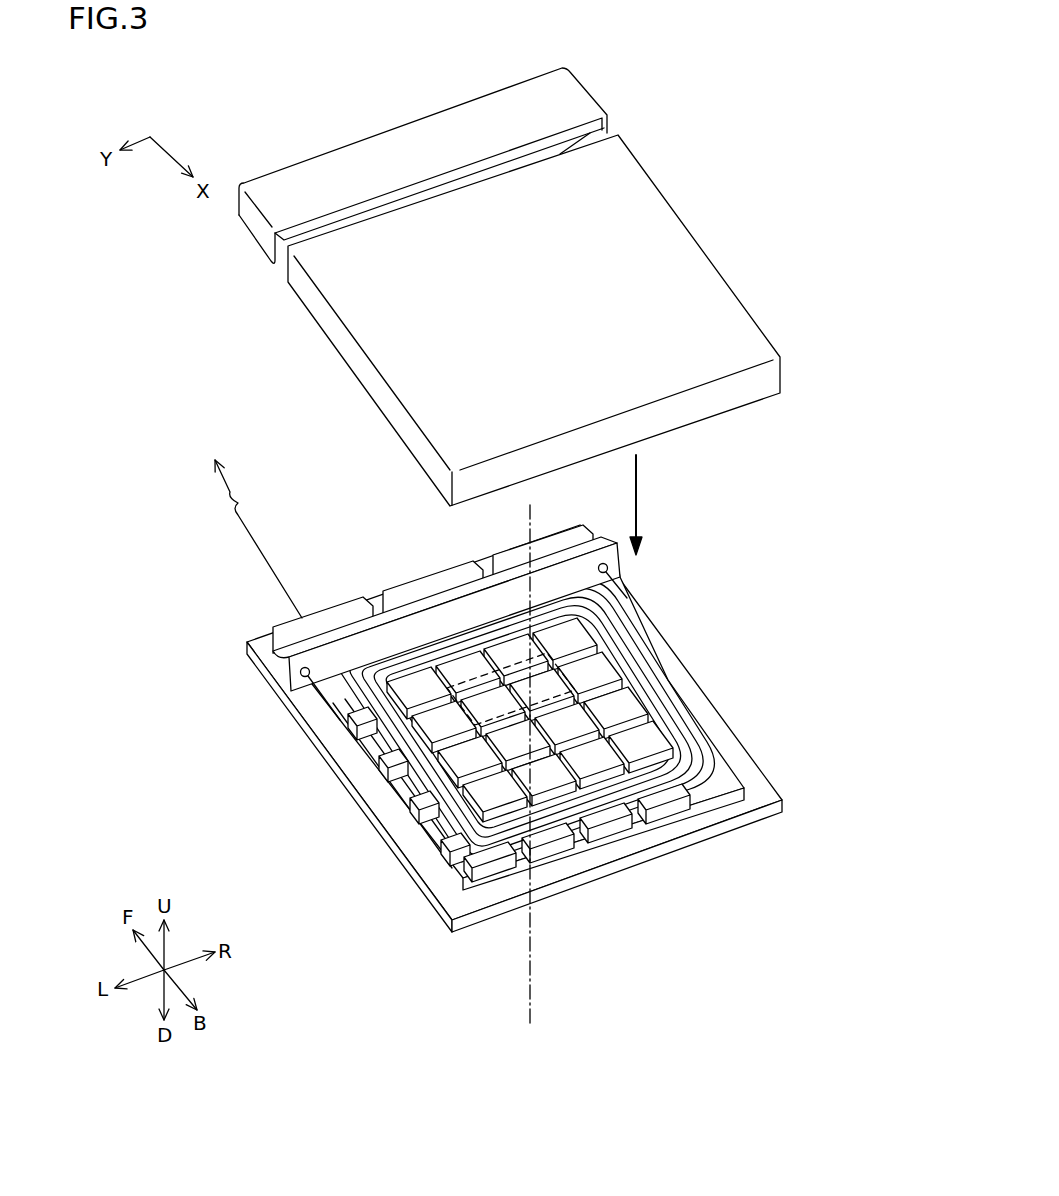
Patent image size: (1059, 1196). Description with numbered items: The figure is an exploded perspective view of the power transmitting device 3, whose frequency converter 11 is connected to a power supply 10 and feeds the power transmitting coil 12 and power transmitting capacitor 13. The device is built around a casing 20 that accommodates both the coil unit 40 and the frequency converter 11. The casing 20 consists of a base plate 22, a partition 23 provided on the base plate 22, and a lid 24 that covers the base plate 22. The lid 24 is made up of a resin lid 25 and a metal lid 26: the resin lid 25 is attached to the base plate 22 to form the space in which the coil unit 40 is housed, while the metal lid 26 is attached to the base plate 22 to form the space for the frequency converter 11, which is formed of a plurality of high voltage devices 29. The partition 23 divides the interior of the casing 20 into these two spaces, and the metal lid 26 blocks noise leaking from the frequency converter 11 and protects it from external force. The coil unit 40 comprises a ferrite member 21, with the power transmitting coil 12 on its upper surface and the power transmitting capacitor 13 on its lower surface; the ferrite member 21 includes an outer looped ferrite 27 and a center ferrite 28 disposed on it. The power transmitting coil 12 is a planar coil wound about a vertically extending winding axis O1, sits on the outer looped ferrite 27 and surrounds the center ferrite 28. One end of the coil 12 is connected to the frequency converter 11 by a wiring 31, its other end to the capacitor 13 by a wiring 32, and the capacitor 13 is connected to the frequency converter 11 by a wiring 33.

The power transmitting device 3 is at (410, 95).
The power supply 10 is at (248, 524).
The frequency converter 11 is at (435, 502).
The power transmitting coil 12 is at (400, 735).
The power transmitting capacitor 13 is at (413, 820).
The casing 20 is at (772, 455).
The ferrite member 21 is at (820, 720).
The base plate 22 is at (690, 693).
The partition 23 is at (610, 557).
The lid 24 is at (189, 228).
The resin lid 25 is at (300, 287).
The metal lid 26 is at (262, 230).
The outer looped ferrite 27 is at (735, 775).
The center ferrite 28 is at (650, 740).
The high voltage device 29 is at (330, 633).
The wiring 31 is at (305, 678).
The wiring 32 is at (410, 698).
The wiring 33 is at (627, 614).
The coil unit 40 is at (229, 780).
The winding axis O1 is at (536, 955).